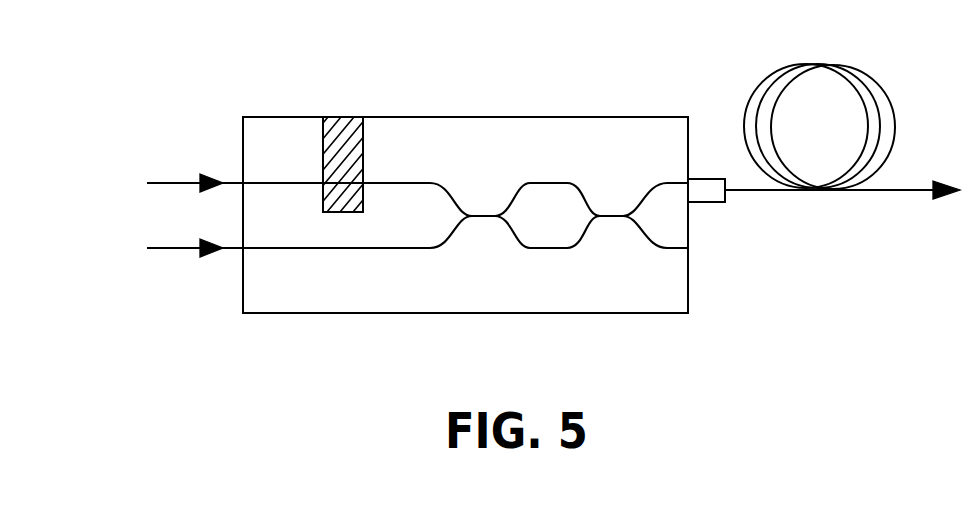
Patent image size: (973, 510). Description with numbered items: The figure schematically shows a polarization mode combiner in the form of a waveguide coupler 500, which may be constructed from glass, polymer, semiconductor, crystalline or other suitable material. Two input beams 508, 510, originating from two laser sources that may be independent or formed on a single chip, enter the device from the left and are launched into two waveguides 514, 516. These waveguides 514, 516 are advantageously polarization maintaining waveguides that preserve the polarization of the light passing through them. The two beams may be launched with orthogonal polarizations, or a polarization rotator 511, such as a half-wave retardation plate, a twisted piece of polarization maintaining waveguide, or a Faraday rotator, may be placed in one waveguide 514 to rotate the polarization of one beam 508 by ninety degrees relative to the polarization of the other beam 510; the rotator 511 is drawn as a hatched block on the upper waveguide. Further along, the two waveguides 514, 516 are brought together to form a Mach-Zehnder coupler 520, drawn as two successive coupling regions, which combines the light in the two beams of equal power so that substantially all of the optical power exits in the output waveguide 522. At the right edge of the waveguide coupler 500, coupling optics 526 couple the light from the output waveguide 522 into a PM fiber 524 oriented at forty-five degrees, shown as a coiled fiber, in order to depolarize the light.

The waveguide coupler 500 is at (548, 160).
The input beam 508 is at (190, 180).
The input beam 510 is at (192, 252).
The polarization rotator 511 is at (350, 148).
The waveguide 514 is at (300, 183).
The waveguide 516 is at (380, 250).
The Mach-Zehnder coupler 520 is at (550, 250).
The output waveguide 522 is at (672, 185).
The PM fiber 524 is at (728, 189).
The coupling optics 526 is at (710, 178).